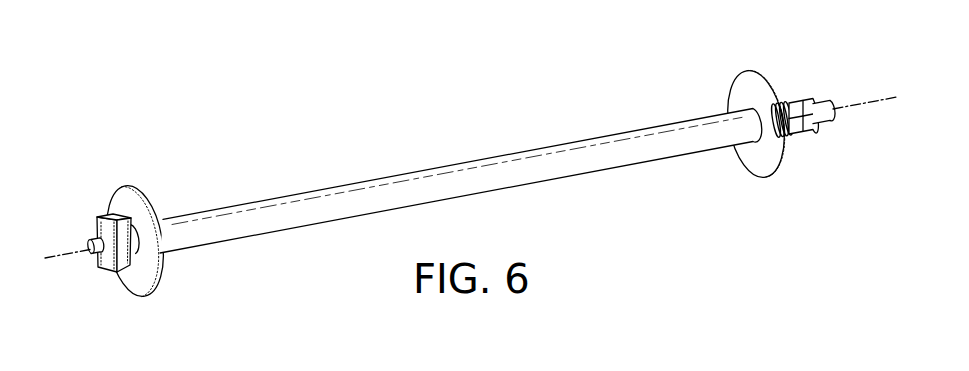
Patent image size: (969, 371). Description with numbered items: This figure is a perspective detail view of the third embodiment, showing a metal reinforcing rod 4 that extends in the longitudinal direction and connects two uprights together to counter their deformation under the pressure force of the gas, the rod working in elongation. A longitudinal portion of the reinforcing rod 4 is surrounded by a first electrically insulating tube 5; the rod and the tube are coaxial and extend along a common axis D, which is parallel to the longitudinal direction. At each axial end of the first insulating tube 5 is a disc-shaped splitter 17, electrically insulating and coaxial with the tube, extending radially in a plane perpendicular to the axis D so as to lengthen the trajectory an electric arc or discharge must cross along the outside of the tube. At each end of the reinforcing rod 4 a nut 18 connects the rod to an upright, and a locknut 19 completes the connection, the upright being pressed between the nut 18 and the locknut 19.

The metal reinforcing rod 4 is at (94, 251).
The first electrically insulating tube 5 is at (602, 157).
The splitter 17 is at (142, 283).
The nut 18 is at (121, 258).
The locknut 19 is at (783, 102).
The common axis D is at (882, 98).